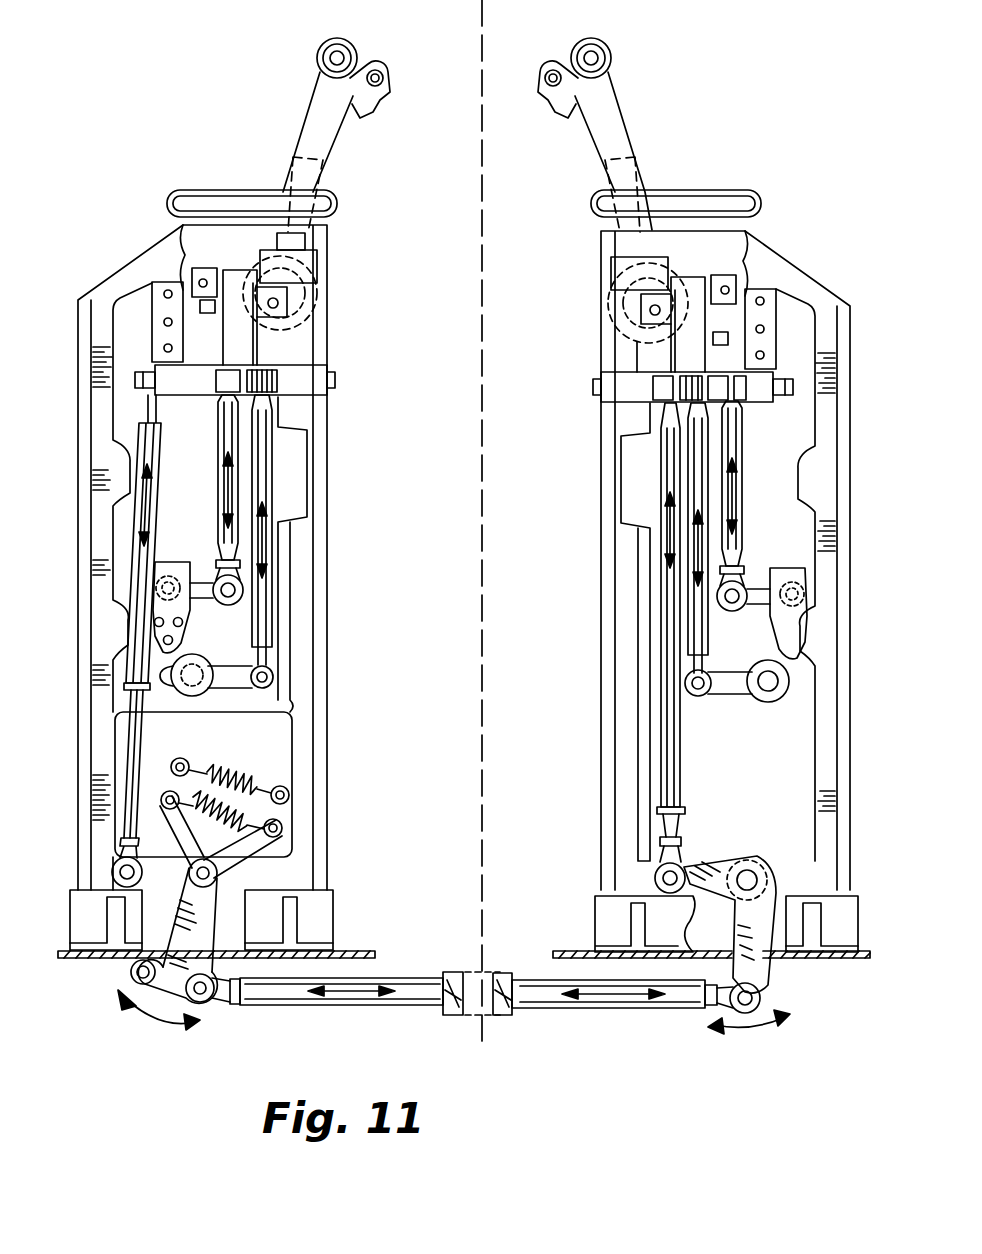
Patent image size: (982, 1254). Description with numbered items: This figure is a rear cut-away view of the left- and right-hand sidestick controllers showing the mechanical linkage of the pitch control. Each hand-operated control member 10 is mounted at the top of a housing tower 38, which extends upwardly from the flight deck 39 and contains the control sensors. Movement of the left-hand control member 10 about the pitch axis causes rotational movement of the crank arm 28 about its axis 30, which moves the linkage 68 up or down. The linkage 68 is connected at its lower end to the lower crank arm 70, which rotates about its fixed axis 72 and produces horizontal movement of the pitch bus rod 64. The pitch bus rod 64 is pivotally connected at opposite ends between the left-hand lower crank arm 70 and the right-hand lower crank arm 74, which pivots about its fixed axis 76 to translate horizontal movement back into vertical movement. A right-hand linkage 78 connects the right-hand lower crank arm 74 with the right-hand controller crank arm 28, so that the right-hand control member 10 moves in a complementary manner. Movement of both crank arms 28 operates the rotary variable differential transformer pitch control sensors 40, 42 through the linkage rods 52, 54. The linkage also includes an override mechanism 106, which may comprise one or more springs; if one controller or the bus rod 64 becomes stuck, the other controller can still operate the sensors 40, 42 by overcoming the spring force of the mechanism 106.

The hand-operated control member 10 is at (304, 99).
The crank arm 28 is at (277, 350).
The axis 30 is at (333, 376).
The housing tower 38 is at (322, 453).
The flight deck 39 is at (369, 957).
The pitch sensor 40 is at (186, 622).
The pitch sensor 42 is at (208, 696).
The control linkage 52 is at (233, 527).
The control linkage 54 is at (268, 640).
The pitch bus rod 64 is at (423, 1012).
The linkage 68 is at (143, 546).
The lower crank arm 70 is at (150, 848).
The fixed axis 72 is at (218, 876).
The right-hand lower crank arm 74 is at (778, 866).
The fixed axis 76 is at (748, 870).
The right-hand linkage 78 is at (672, 792).
The override mechanism 106 is at (246, 765).